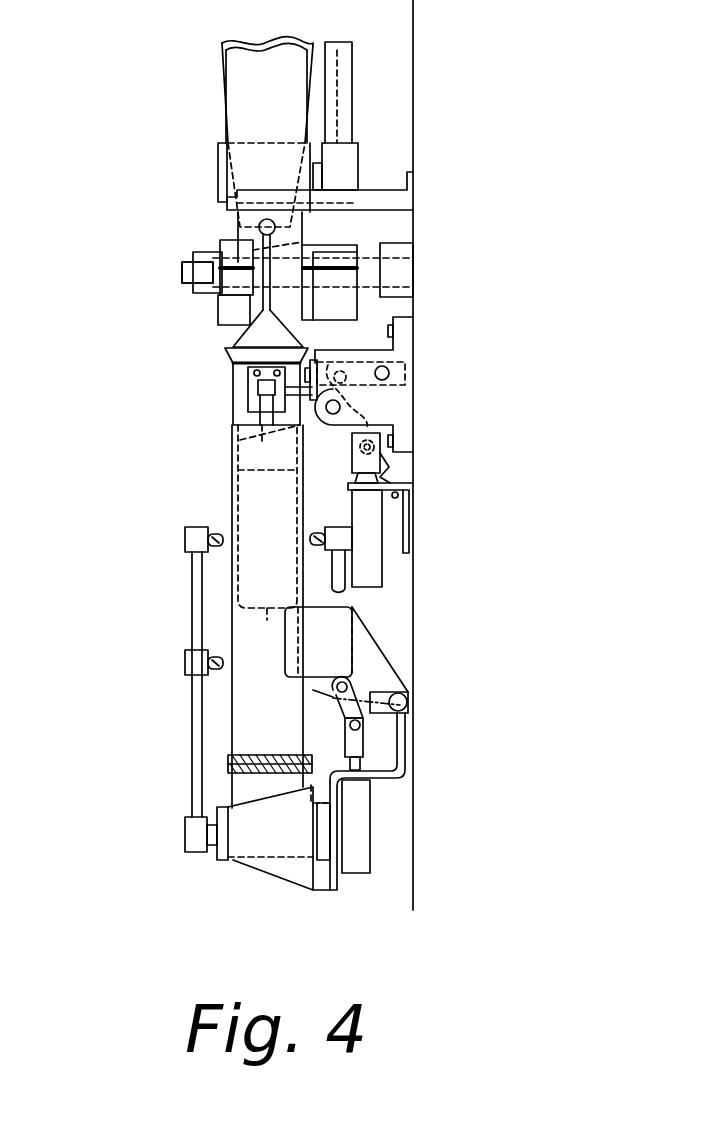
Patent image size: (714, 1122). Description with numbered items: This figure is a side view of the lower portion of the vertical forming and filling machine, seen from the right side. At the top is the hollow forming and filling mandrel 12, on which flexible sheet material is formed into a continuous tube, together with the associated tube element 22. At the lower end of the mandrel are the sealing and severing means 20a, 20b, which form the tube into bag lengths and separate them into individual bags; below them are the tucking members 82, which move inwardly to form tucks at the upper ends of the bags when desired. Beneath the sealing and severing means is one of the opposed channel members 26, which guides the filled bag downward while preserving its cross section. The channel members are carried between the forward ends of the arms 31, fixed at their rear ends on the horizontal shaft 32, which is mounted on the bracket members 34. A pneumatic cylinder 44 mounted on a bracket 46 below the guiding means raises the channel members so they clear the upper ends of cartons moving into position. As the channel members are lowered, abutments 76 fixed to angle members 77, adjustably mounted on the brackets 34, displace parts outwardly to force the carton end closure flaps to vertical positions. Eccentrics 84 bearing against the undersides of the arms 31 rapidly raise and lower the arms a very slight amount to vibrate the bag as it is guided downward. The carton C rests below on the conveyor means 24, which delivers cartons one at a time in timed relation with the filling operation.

The forming and filling mandrel 12 is at (218, 62).
The inner tube 22 is at (288, 63).
The sealing and severing means 20a is at (165, 252).
The sealing and severing means 20b is at (197, 272).
The tucking members 82 is at (263, 297).
The channel members 26 is at (217, 402).
The abutments 76 is at (270, 393).
The angle members 77 is at (317, 360).
The bracket members 34 is at (410, 327).
The arms 31 is at (403, 365).
The horizontal shaft 32 is at (390, 373).
The eccentrics 84 is at (330, 426).
The bracket 46 is at (408, 512).
The pneumatic cylinder 44 is at (377, 572).
The cartons C is at (230, 497).
The conveyor means 24 is at (222, 767).